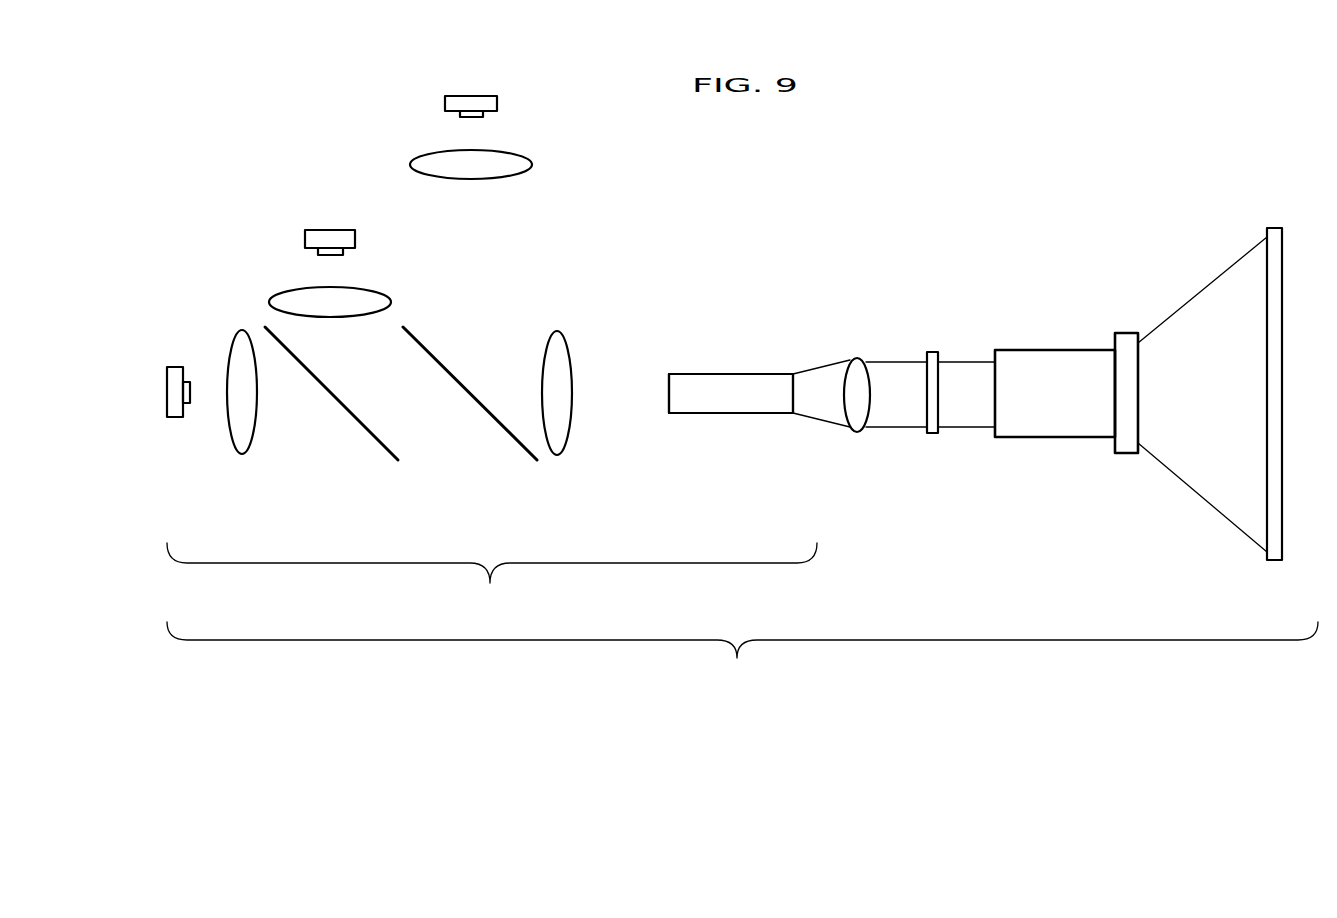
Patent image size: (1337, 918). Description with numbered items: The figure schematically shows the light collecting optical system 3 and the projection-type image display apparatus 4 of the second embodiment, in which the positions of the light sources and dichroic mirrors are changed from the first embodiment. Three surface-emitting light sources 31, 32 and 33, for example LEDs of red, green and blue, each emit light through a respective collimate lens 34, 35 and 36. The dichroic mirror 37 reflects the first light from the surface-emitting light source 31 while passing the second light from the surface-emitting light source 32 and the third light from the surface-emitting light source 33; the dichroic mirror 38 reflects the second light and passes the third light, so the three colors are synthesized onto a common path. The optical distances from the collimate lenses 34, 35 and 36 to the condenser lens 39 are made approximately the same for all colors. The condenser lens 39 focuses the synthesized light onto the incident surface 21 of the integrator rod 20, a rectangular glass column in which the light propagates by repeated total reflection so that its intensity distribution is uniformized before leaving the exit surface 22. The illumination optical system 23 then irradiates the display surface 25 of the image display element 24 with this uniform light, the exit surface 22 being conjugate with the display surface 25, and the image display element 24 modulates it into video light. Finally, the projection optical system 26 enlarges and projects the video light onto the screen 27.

The light collecting optical system 3 is at (492, 575).
The projection-type image display apparatus 4 is at (742, 661).
The integrator rod 20 is at (731, 360).
The incident surface 21 is at (649, 423).
The exit surface 22 is at (818, 425).
The illumination optical system 23 is at (863, 360).
The image display element 24 is at (943, 362).
The display surface 25 is at (1002, 434).
The projection optical system 26 is at (1136, 359).
The screen 27 is at (1263, 361).
The surface-emitting light source 31 is at (475, 69).
The surface-emitting light source 32 is at (334, 206).
The surface-emitting light source 33 is at (185, 362).
The collimate lens 34 is at (450, 124).
The collimate lens 35 is at (302, 264).
The collimate lens 36 is at (217, 351).
The dichroic mirror 37 is at (331, 430).
The dichroic mirror 38 is at (470, 430).
The condenser lens 39 is at (591, 360).